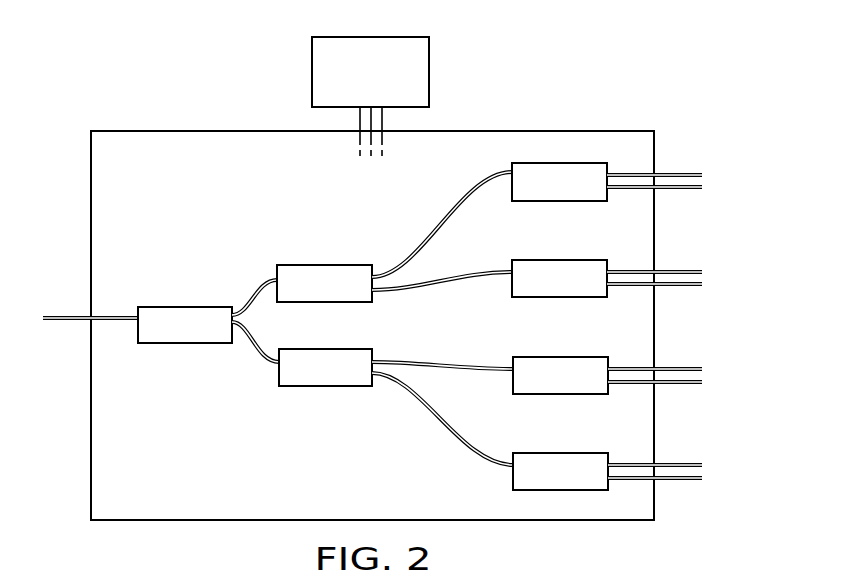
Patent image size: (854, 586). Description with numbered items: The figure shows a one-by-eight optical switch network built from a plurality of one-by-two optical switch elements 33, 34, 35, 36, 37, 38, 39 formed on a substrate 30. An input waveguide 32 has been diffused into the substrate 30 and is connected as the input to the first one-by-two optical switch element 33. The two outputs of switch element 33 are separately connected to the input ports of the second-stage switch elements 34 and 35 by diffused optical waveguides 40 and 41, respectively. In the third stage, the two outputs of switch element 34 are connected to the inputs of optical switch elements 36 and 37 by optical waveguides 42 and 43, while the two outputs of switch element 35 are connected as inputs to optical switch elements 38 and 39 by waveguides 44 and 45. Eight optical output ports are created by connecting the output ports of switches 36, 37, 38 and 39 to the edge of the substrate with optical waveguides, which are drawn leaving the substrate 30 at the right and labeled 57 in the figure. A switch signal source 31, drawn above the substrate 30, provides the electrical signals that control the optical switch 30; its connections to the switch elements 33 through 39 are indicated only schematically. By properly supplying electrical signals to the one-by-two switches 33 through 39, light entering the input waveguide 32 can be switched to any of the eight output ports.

The substrate 30 is at (512, 132).
The switch signal source 31 is at (372, 37).
The input waveguide 32 is at (113, 316).
The 1-by-2 optical switch element 33 is at (172, 307).
The 1-by-2 switch element 34 is at (313, 265).
The 1-by-2 switch element 35 is at (314, 349).
The 1-by-2 optical switch element 36 is at (549, 163).
The 1-by-2 optical switch element 37 is at (549, 260).
The 1-by-2 optical switch element 38 is at (550, 357).
The 1-by-2 optical switch element 39 is at (550, 453).
The diffused optical waveguide 40 is at (252, 294).
The diffused optical waveguide 41 is at (254, 350).
The optical waveguide 42 is at (436, 231).
The optical waveguide 43 is at (455, 284).
The waveguide 44 is at (453, 362).
The waveguide 45 is at (436, 413).
The output optical fibers 57 is at (628, 173).